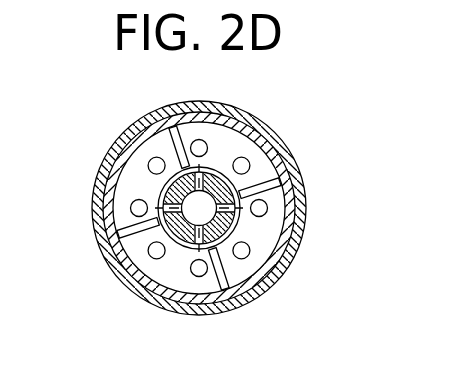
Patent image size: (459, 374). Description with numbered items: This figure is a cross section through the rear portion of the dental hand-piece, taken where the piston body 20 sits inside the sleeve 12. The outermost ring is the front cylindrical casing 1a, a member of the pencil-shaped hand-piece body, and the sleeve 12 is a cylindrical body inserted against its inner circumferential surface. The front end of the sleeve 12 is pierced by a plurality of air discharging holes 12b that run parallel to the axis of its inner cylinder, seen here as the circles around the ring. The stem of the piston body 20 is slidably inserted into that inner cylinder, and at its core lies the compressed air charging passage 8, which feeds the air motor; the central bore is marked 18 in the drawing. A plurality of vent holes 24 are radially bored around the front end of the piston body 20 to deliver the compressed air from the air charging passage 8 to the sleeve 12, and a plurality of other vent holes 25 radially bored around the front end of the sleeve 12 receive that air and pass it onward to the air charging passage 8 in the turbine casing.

The sleeve 12 is at (127, 148).
The air discharging holes 12b is at (232, 100).
The vent holes 25 is at (157, 106).
The vent holes 24 is at (238, 130).
The compressed air charging passage 8 is at (127, 270).
The piston body 20 is at (280, 268).
The front cylindrical casing 1a is at (175, 100).
The bore 18 is at (199, 208).